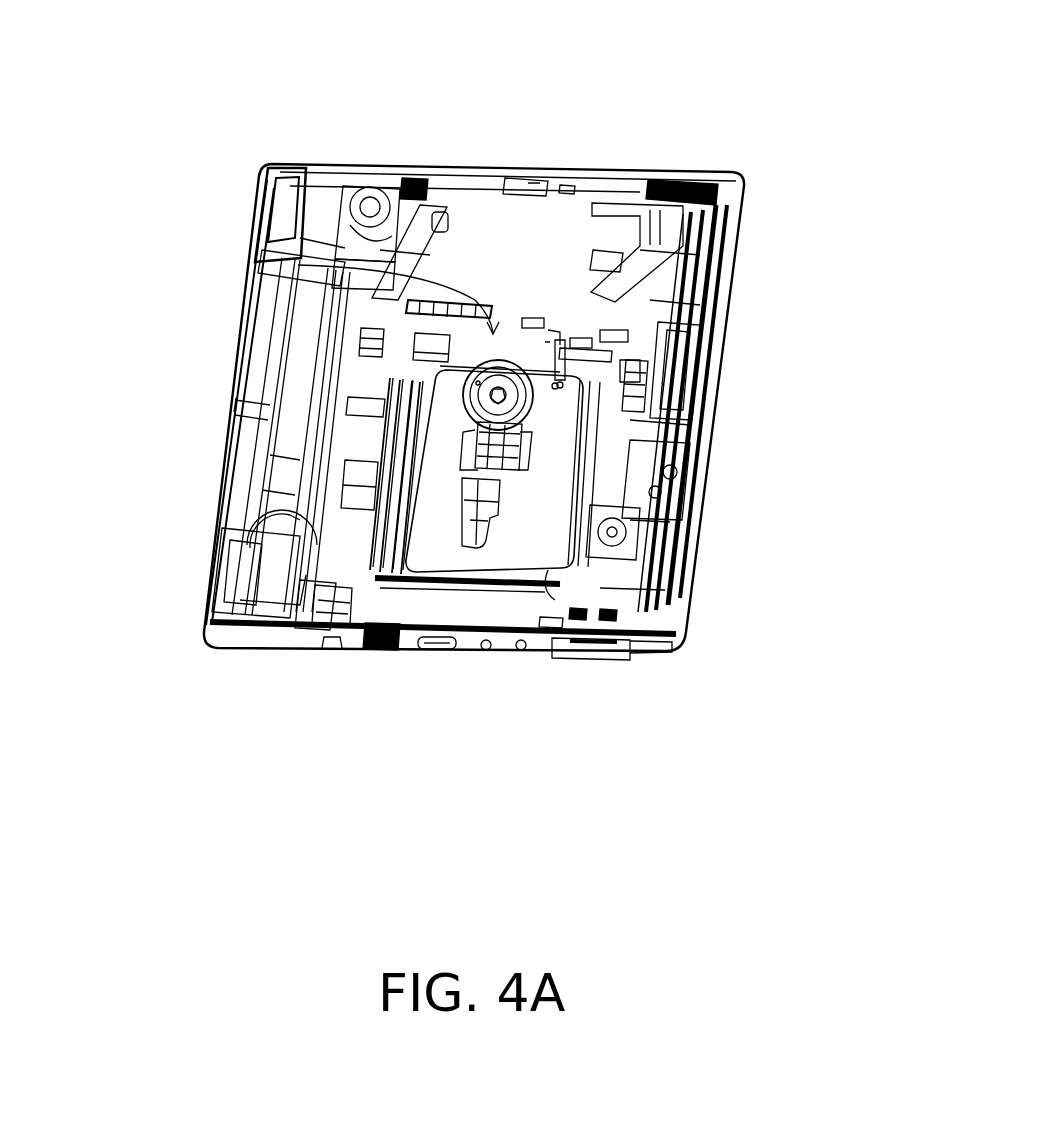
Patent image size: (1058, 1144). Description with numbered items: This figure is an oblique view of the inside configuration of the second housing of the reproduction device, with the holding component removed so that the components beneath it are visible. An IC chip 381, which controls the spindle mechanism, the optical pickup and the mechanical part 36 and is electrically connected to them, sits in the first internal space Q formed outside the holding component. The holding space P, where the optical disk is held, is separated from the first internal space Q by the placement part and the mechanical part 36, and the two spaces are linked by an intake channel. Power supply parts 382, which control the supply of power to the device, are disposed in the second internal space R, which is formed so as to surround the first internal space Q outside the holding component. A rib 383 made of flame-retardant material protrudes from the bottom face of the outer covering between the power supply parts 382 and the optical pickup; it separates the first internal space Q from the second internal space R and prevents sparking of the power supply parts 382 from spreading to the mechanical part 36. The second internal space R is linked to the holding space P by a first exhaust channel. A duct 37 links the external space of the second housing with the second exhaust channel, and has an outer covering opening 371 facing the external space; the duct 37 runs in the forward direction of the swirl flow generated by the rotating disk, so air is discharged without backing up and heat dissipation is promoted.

The mechanical part 36 is at (517, 545).
The duct 37 is at (653, 263).
The outer covering opening 371 is at (684, 182).
The IC chip 381 is at (475, 510).
The power supply parts 382 is at (358, 478).
The rib 383 is at (377, 510).
The holding space P is at (535, 493).
The first internal space Q is at (399, 516).
The second internal space R is at (254, 229).